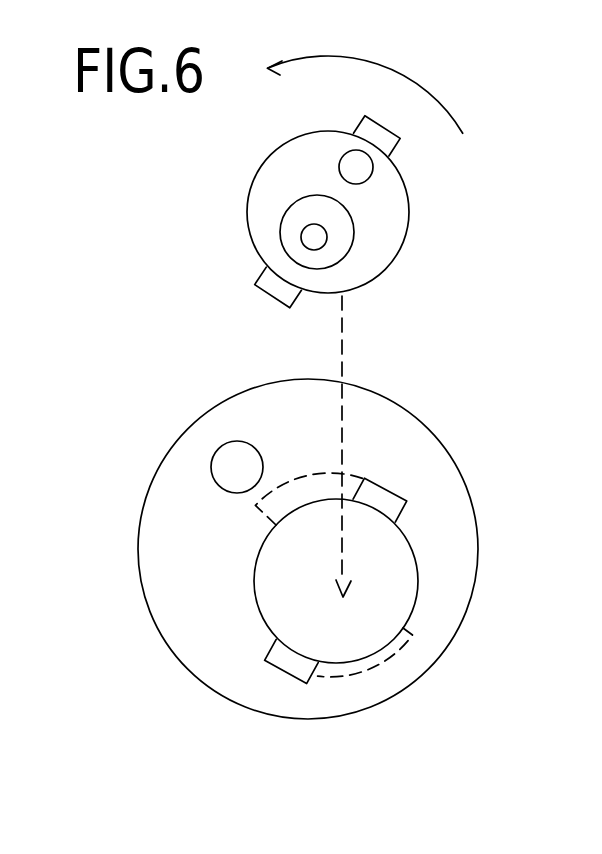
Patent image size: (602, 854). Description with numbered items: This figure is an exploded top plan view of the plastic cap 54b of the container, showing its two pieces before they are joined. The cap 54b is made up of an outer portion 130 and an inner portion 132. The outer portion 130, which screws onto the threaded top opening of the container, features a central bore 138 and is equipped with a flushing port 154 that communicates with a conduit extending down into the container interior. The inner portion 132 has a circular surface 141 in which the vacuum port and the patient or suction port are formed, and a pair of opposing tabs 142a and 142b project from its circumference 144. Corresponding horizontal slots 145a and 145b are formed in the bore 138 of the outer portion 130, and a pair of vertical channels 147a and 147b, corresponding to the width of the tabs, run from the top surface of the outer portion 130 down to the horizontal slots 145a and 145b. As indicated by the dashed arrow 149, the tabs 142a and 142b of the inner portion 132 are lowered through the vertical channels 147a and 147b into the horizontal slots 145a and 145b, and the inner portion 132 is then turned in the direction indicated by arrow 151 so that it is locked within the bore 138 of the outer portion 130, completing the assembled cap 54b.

The inner portion 132 is at (317, 210).
The circular surface 141 is at (393, 212).
The circumference 144 is at (250, 198).
The tab 142a is at (273, 288).
The tab 142b is at (384, 129).
The dashed arrow 149 is at (345, 327).
The arrow 151 is at (370, 60).
The outer portion 130 is at (308, 575).
The bore 138 is at (420, 580).
The vertical channel 147a is at (283, 667).
The vertical channel 147b is at (388, 485).
The horizontal slot 145a is at (372, 676).
The horizontal slot 145b is at (307, 482).
The flushing port 154 is at (217, 481).
The plastic cap 54b is at (510, 408).